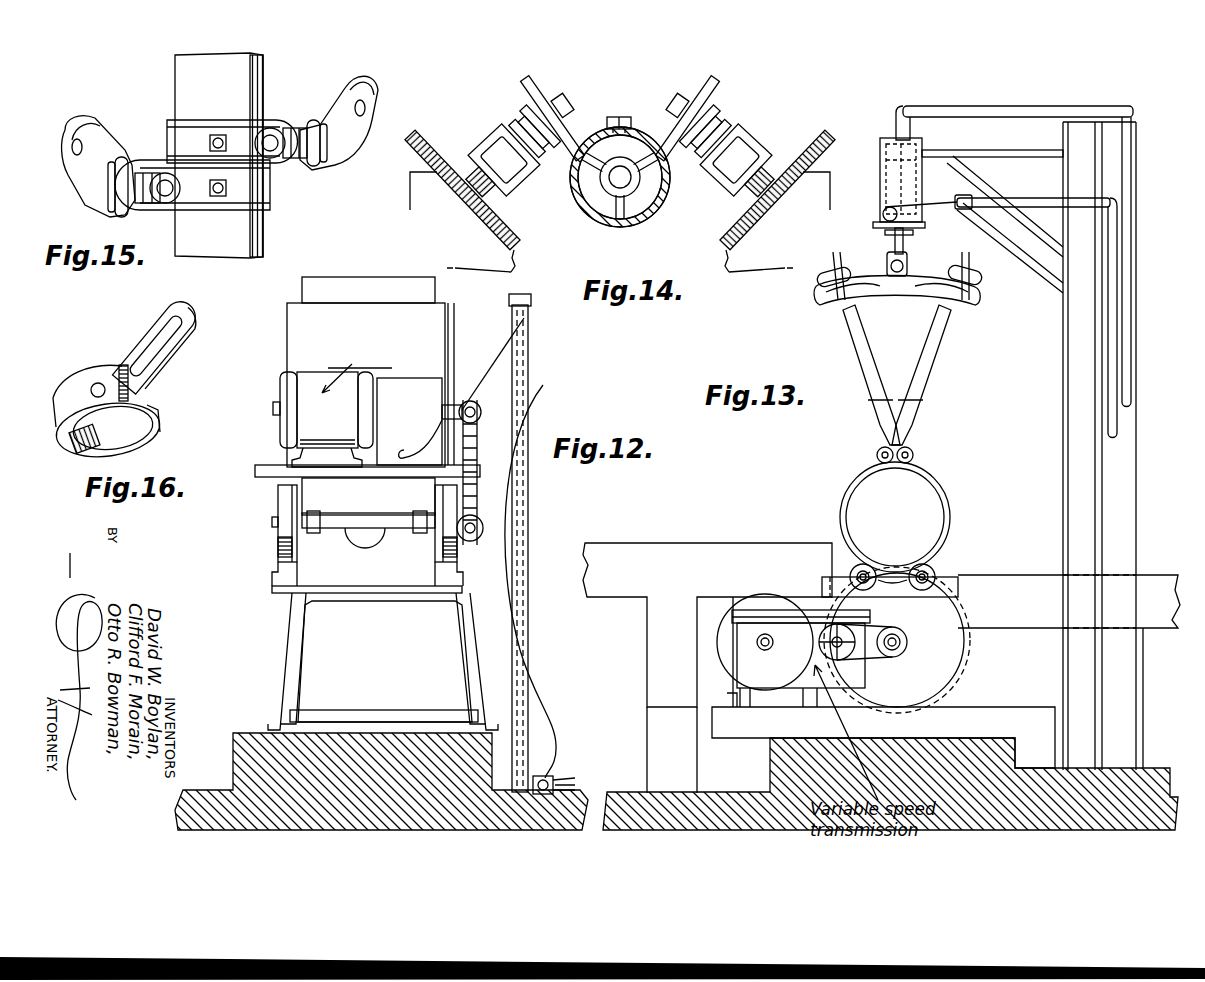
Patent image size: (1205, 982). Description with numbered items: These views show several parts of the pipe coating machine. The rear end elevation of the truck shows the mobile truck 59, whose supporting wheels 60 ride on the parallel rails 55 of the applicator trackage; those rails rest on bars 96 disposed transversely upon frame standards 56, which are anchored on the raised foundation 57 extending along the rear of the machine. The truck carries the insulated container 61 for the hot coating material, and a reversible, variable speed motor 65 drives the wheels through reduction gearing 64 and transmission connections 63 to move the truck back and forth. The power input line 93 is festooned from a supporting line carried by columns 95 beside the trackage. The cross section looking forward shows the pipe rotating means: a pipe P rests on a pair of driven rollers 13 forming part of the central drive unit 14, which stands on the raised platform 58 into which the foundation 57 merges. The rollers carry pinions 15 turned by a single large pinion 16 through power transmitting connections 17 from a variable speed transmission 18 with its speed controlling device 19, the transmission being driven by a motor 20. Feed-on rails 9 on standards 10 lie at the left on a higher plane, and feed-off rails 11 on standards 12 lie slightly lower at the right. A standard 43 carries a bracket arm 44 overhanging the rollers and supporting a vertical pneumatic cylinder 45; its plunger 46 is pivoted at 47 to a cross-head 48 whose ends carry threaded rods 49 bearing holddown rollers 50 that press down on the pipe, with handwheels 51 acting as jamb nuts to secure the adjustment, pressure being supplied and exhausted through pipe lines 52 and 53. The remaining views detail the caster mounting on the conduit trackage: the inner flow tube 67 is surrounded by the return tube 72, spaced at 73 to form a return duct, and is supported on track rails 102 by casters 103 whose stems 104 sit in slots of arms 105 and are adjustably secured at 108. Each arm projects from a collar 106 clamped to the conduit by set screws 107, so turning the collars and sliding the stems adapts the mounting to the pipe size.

In FIG. 13, the feed-on rails 9 is at (722, 550).
In FIG. 13, the standards 10 is at (670, 688).
In FIG. 13, the feed-off rails 11 is at (1069, 601).
In FIG. 13, the standards 12 is at (1138, 732).
In FIG. 13, the driven rollers 13 is at (928, 570).
In FIG. 13, the drive unit 14 is at (952, 585).
In FIG. 13, the pinions 15 is at (853, 565).
In FIG. 13, the large pinion 16 is at (958, 654).
In FIG. 13, the power transmitting connections 17 is at (905, 614).
In FIG. 13, the variable speed transmission 18 is at (787, 615).
In FIG. 13, the speed controlling device 19 is at (820, 648).
In FIG. 13, the motor 20 is at (762, 600).
In FIG. 13, the standard 43 is at (1125, 525).
In FIG. 13, the bracket arm 44 is at (1012, 142).
In FIG. 13, the pneumatic cylinder 45 is at (880, 148).
In FIG. 13, the pneumatic plunger 46 is at (895, 245).
In FIG. 13, the pivot 47 is at (907, 266).
In FIG. 13, the cross-head 48 is at (900, 296).
In FIG. 13, the threaded rods 49 is at (933, 372).
In FIG. 13, the holddown rollers 50 is at (877, 457).
In FIG. 13, the handwheels 51 is at (826, 288).
In FIG. 13, the pipe line 52 is at (990, 98).
In FIG. 13, the pipe line 53 is at (1040, 200).
In FIG. 12, the rails 55 is at (298, 575).
In FIG. 12, the frame standards 56 is at (440, 635).
In FIG. 12, the raised foundation 57 is at (258, 735).
In FIG. 13, the raised foundation 57 is at (772, 762).
In FIG. 13, the raised platform 58 is at (992, 710).
In FIG. 12, the mobile truck 59 is at (315, 502).
In FIG. 12, the supporting wheels 60 is at (278, 545).
In FIG. 12, the container 61 is at (450, 333).
In FIG. 12, the transmission connections 63 is at (478, 455).
In FIG. 12, the reduction gearing 64 is at (440, 378).
In FIG. 12, the reversible, variable speed motor 65 is at (312, 425).
In FIG. 14, the flow tube 67 is at (600, 183).
In FIG. 14, the return tube 72 is at (640, 215).
In FIG. 14, the space 73 is at (588, 208).
In FIG. 12, the power input line 93 is at (505, 390).
In FIG. 12, the columns 95 is at (512, 663).
In FIG. 12, the bars 96 is at (300, 592).
In FIG. 14, the track rails 102 is at (455, 124).
In FIG. 15, the casters 103 is at (83, 122).
In FIG. 14, the casters 103 is at (478, 200).
In FIG. 15, the stems 104 is at (272, 152).
In FIG. 14, the stems 104 is at (680, 97).
In FIG. 15, the arms 105 is at (150, 163).
In FIG. 16, the arms 105 is at (170, 358).
In FIG. 14, the arms 105 is at (538, 92).
In FIG. 15, the collars 106 is at (183, 128).
In FIG. 16, the collars 106 is at (155, 405).
In FIG. 14, the collars 106 is at (660, 195).
In FIG. 15, the set screws 107 is at (220, 137).
In FIG. 14, the set screws 107 is at (598, 145).
In FIG. 15, the stem securing means 108 is at (135, 192).
In FIG. 14, the stem securing means 108 is at (675, 112).
In FIG. 13, the pipe P is at (942, 497).